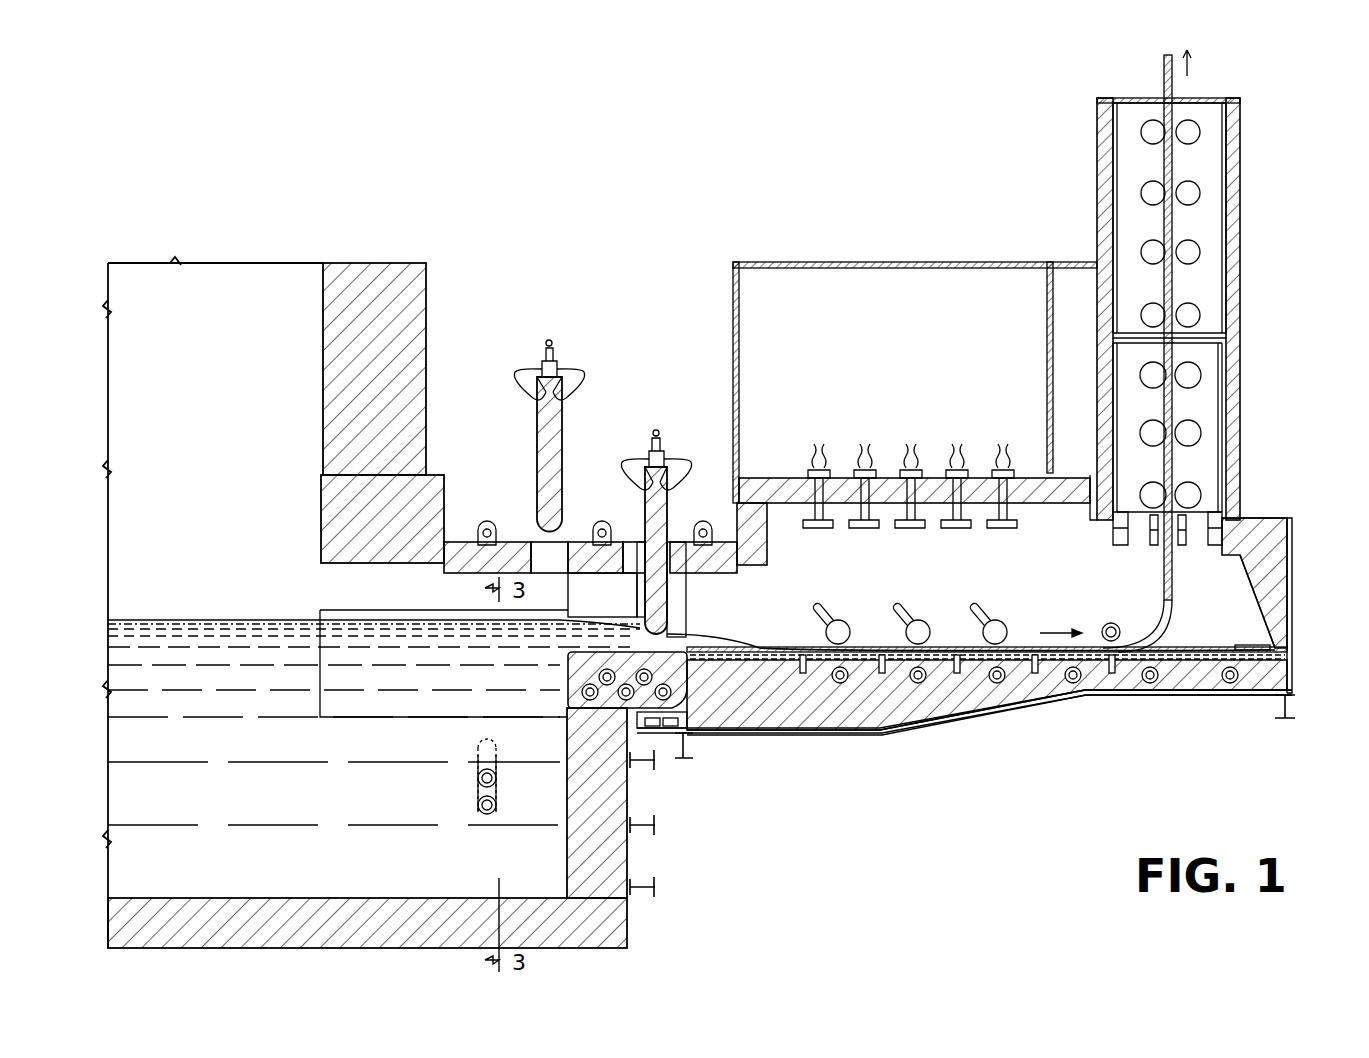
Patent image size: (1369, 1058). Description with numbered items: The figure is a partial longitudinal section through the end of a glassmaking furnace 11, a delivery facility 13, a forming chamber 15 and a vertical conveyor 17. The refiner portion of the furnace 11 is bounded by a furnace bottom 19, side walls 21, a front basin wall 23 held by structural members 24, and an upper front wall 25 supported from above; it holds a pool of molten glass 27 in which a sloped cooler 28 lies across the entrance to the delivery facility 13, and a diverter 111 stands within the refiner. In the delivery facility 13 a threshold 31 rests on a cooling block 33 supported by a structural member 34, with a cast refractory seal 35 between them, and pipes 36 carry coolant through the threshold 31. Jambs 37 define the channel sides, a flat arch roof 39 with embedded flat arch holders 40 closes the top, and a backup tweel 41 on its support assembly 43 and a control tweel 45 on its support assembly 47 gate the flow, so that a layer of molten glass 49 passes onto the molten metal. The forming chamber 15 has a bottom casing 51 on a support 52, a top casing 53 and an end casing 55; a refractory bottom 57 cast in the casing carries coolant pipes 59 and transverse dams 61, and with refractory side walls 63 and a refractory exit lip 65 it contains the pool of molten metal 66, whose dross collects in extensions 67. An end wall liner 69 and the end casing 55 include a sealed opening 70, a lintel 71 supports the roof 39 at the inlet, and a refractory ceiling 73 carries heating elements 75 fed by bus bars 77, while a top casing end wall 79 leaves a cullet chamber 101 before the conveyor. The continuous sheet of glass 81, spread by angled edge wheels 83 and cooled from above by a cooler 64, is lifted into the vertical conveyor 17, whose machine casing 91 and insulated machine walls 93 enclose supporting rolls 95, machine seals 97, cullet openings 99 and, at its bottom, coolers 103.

The furnace 11 is at (463, 268).
The delivery facility 13 is at (662, 303).
The forming chamber 15 is at (912, 233).
The vertical conveyor 17 is at (1074, 147).
The furnace bottom 19 is at (265, 948).
The side walls 21 is at (213, 566).
The front basin wall 23 is at (627, 855).
The structural members 24 is at (660, 764).
The upper front wall 25 is at (426, 368).
The pool of molten glass 27 is at (252, 802).
The cooler 28 is at (478, 790).
The threshold 31 is at (568, 700).
The cooling block 33 is at (665, 755).
The structural member 34 is at (695, 740).
The cast refractory seal 35 is at (680, 722).
The conduits or pipes 36 is at (572, 678).
The jambs 37 is at (686, 598).
The roof 39 is at (580, 574).
The flat arch holders 40 is at (602, 524).
The backup tweel 41 is at (562, 438).
The support assembly 43 is at (575, 368).
The control tweel 45 is at (667, 520).
The support assembly 47 is at (676, 474).
The layer of molten glass 49 is at (678, 634).
The bottom casing 51 is at (940, 724).
The support 52 is at (1295, 718).
The top casing 53 is at (733, 342).
The end casing 55 is at (1292, 560).
The refractory bottom 57 is at (975, 702).
The pipes 59 is at (1112, 674).
The dams or weirs 61 is at (803, 674).
The refractory side walls 63 is at (805, 641).
The cooler 64 is at (1108, 624).
The refractory exit lip 65 is at (1280, 658).
The pool of molten metal 66 is at (1185, 690).
The extensions 67 is at (1240, 648).
The end wall liner 69 is at (1244, 580).
The opening 70 is at (1292, 625).
The lintel 71 is at (768, 556).
The ceiling or roof 73 is at (752, 478).
The heating elements 75 is at (945, 530).
The bus bars 77 is at (913, 452).
The top casing end wall 79 is at (1047, 358).
The continuous sheet of glass 81 is at (1020, 647).
The angled edge wheels 83 is at (965, 634).
The machine casing 91 is at (1226, 392).
The machine walls 93 is at (1240, 440).
The supporting rolls 95 is at (1185, 195).
The machine seals 97 is at (1200, 98).
The openings 99 is at (1113, 334).
The cullet chamber 101 is at (1090, 421).
The coolers 103 is at (1125, 546).
The diverter 111 is at (357, 612).